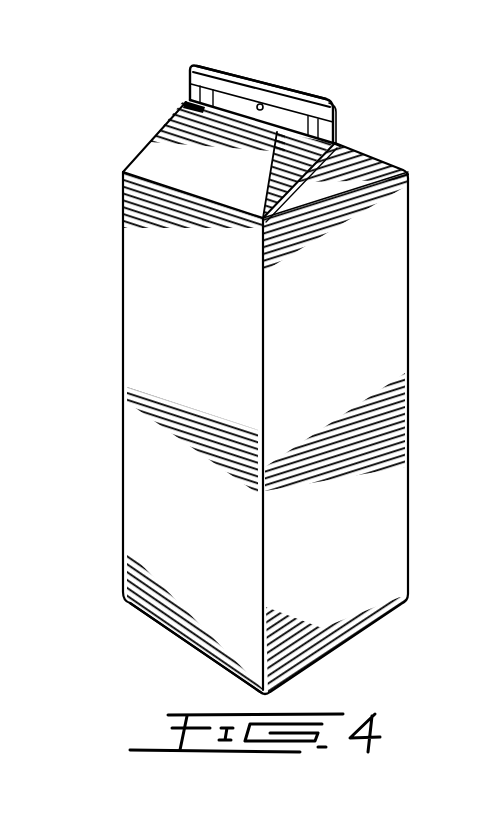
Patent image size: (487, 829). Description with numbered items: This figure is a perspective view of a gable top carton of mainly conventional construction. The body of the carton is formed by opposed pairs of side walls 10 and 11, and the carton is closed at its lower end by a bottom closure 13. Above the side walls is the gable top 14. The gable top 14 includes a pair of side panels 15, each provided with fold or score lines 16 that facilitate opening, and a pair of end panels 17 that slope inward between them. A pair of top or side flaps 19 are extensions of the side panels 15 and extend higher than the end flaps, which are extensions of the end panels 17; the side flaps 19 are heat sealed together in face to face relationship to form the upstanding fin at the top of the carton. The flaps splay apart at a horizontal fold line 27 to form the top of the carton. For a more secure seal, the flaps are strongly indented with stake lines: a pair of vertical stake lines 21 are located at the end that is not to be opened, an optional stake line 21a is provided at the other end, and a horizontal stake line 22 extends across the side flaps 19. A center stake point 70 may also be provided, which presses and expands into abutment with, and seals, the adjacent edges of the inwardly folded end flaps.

The side wall 10 is at (163, 578).
The side wall 11 is at (378, 310).
The bottom closure 13 is at (196, 657).
The gable top 14 is at (364, 135).
The side panel 15 is at (159, 150).
The fold or score line 16 is at (268, 172).
The end panel 17 is at (313, 192).
The side flap 19 is at (331, 96).
The vertical stake line 21 is at (191, 82).
The stake line 21a is at (335, 129).
The horizontal stake line 22 is at (252, 92).
The horizontal fold line 27 is at (185, 108).
The center stake point 70 is at (259, 103).